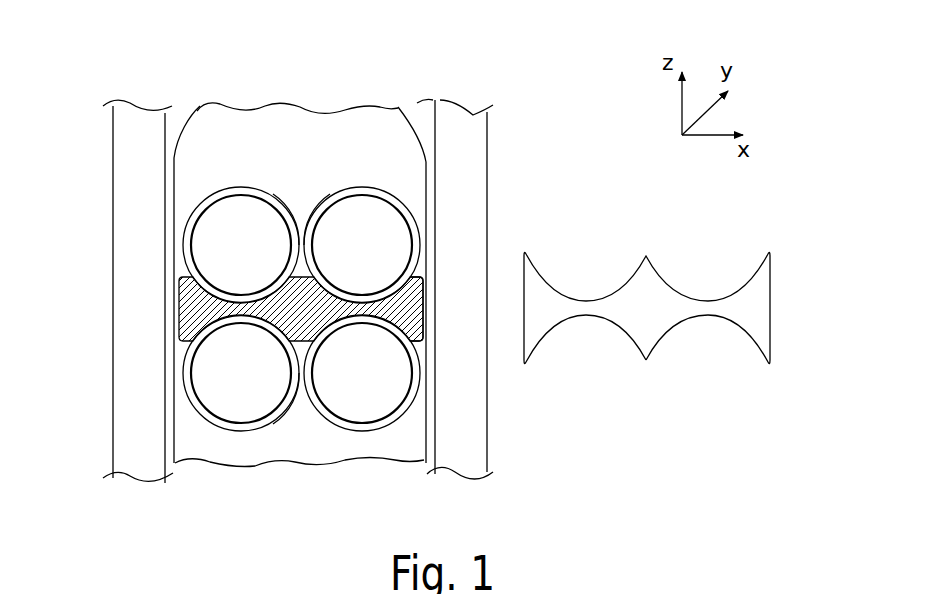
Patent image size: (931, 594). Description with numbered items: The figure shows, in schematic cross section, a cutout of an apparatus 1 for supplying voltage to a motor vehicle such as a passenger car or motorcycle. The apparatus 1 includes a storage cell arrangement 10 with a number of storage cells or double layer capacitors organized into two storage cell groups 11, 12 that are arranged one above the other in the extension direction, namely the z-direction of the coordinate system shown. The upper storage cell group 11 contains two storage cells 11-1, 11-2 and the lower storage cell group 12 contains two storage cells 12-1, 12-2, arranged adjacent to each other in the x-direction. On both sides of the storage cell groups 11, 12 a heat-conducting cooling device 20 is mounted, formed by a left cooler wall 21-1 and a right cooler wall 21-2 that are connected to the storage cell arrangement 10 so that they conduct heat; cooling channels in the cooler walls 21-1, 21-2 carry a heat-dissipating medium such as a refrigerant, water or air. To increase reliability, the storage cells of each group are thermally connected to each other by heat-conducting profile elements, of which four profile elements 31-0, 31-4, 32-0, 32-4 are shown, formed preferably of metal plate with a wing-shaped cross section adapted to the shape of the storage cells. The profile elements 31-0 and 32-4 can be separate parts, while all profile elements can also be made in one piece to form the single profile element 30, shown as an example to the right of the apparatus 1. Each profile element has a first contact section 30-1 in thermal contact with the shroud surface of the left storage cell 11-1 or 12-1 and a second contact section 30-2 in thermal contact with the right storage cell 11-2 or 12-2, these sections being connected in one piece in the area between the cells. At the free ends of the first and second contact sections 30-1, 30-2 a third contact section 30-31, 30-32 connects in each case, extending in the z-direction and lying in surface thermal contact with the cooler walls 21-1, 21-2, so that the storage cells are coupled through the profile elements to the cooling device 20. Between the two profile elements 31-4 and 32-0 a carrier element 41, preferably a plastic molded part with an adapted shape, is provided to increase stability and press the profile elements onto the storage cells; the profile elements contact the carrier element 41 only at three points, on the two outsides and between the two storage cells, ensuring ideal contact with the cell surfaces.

The apparatus for supplying voltage 1 is at (80, 466).
The storage cell arrangement 10 is at (86, 70).
The storage cell group 11 is at (172, 243).
The storage cell 11-1 is at (217, 257).
The storage cell 11-2 is at (338, 257).
The storage cell group 12 is at (172, 372).
The storage cell 12-1 is at (217, 385).
The storage cell 12-2 is at (338, 385).
The heat-conducting cooling device 20 is at (470, 157).
The cooler wall 21-1 is at (127, 142).
The cooler wall 21-2 is at (467, 227).
The profile element 30 is at (790, 220).
The first contact section 30-1 is at (250, 187).
The second contact section 30-2 is at (368, 188).
The third contact section 30-31 is at (174, 158).
The third contact section 30-32 is at (430, 153).
The profile element 31-0 is at (273, 193).
The profile element 31-4 is at (415, 328).
The profile element 32-0 is at (302, 430).
The profile element 32-4 is at (230, 435).
The carrier element 41 is at (177, 311).